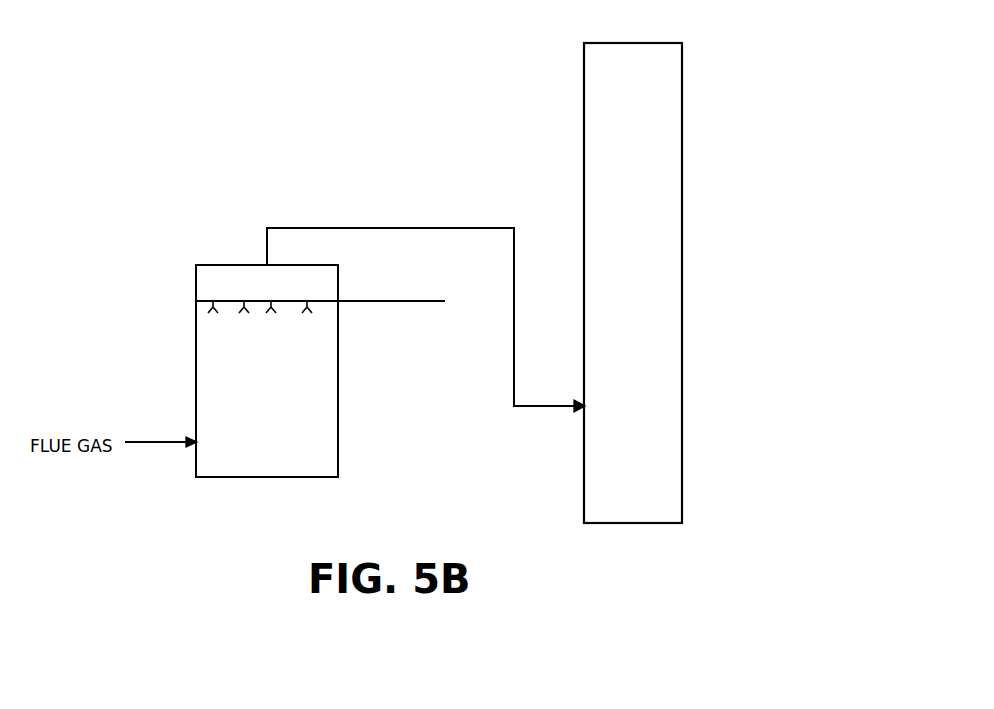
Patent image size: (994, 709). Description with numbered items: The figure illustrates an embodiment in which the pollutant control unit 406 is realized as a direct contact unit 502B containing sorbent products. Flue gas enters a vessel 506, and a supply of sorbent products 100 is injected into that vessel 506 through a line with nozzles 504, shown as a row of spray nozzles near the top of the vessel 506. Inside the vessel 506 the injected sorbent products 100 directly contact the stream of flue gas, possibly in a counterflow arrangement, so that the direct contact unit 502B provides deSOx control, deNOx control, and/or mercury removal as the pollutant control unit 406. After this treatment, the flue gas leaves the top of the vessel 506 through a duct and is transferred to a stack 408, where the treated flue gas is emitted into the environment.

The pollutant control unit 406 is at (208, 170).
The direct contact unit 502B is at (231, 265).
The sorbent products 100 is at (232, 332).
The line with nozzles 504 is at (392, 301).
The vessel 506 is at (233, 478).
The stack 408 is at (682, 129).